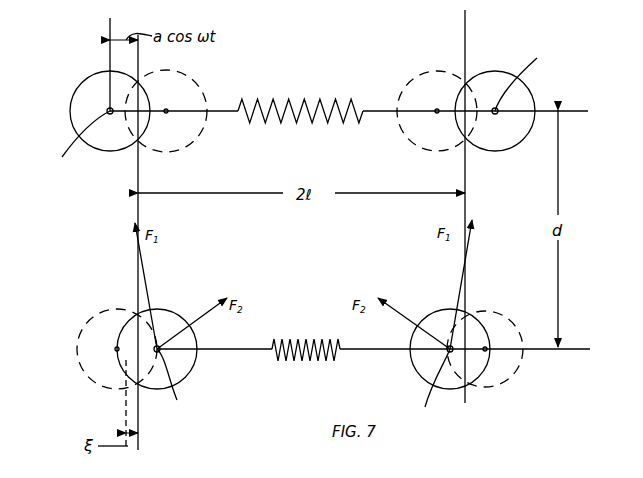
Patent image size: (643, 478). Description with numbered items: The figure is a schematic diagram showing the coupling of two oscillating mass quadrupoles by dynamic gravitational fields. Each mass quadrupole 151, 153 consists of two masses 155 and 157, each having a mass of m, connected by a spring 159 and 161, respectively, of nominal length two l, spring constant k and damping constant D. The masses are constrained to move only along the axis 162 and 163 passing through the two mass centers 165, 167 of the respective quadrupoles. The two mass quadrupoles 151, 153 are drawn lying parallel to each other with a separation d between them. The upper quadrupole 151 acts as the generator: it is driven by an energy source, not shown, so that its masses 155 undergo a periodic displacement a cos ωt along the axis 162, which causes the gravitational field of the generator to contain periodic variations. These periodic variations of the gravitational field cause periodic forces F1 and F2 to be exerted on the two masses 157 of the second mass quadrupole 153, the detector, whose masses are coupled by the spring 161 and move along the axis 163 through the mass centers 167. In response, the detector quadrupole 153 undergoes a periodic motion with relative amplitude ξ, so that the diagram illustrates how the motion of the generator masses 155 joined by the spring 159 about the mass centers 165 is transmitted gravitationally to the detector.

The mass quadrupole 151 is at (385, 41).
The mass quadrupole 153 is at (320, 275).
The masses 155 is at (94, 77).
The masses 157 is at (168, 318).
The spring 159 is at (300, 100).
The spring 161 is at (310, 340).
The axis 162 is at (576, 112).
The axis 163 is at (543, 378).
The mass center 165 is at (311, 113).
The mass center 167 is at (306, 384).